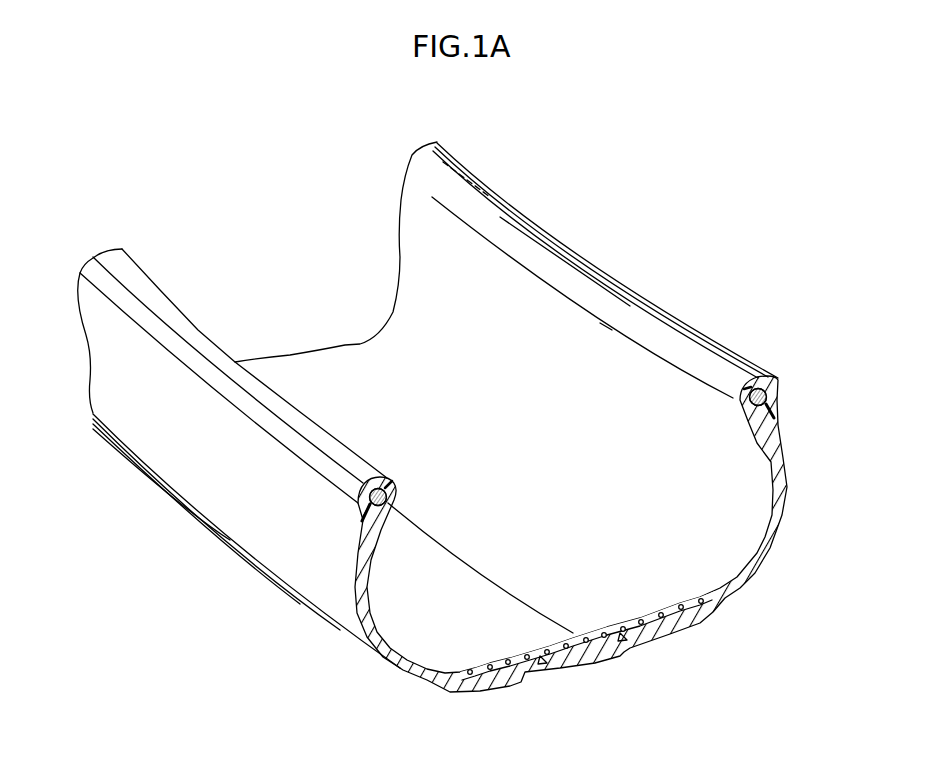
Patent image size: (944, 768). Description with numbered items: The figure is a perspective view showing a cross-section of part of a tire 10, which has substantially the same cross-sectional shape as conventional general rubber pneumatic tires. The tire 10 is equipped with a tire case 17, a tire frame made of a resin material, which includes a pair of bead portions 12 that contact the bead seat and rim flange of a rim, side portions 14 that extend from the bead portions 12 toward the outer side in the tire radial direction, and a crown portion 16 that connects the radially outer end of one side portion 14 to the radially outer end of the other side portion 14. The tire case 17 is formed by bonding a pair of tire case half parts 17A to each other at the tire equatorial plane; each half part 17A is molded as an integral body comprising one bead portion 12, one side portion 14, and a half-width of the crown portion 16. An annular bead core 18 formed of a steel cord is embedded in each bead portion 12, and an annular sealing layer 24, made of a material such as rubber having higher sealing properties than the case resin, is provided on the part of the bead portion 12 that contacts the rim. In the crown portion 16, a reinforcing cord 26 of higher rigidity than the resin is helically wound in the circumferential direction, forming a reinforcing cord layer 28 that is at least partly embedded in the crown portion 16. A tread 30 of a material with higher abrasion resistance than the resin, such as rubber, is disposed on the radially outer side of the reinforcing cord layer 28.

The tire 10 is at (637, 240).
The bead portion 12 is at (354, 460).
The side portion 14 is at (313, 562).
The crown portion 16 is at (655, 638).
The tire case 17 is at (562, 528).
The tire case half part 17A is at (454, 584).
The bead core 18 is at (397, 485).
The sealing layer 24 is at (302, 448).
The reinforcing cord 26 is at (511, 672).
The reinforcing cord layer 28 is at (544, 658).
The tread 30 is at (706, 625).